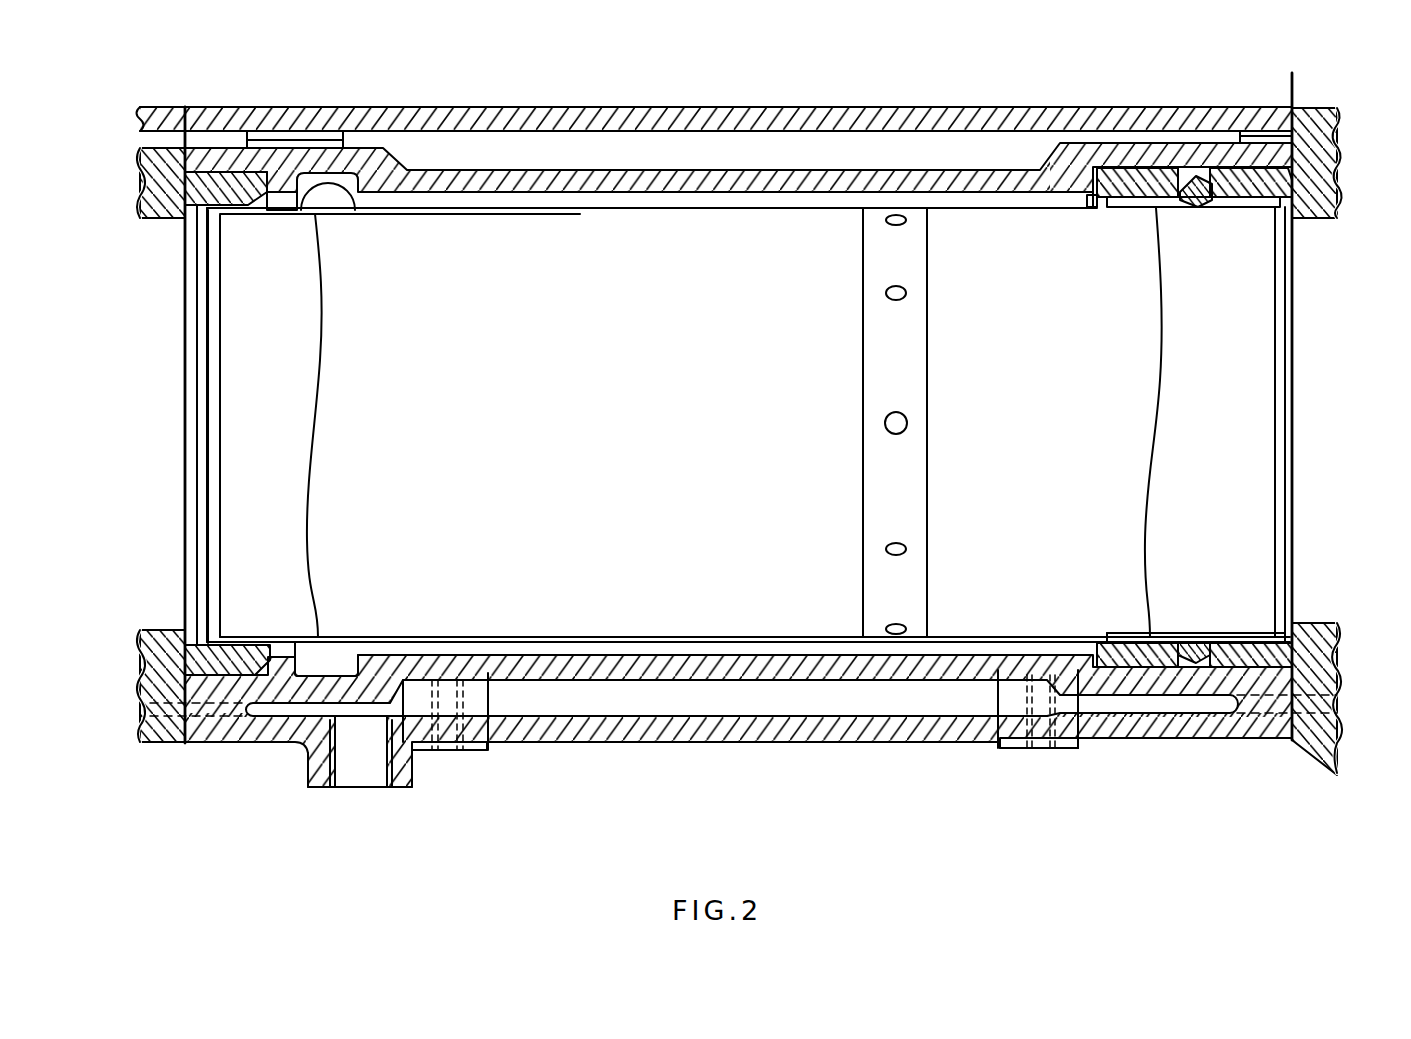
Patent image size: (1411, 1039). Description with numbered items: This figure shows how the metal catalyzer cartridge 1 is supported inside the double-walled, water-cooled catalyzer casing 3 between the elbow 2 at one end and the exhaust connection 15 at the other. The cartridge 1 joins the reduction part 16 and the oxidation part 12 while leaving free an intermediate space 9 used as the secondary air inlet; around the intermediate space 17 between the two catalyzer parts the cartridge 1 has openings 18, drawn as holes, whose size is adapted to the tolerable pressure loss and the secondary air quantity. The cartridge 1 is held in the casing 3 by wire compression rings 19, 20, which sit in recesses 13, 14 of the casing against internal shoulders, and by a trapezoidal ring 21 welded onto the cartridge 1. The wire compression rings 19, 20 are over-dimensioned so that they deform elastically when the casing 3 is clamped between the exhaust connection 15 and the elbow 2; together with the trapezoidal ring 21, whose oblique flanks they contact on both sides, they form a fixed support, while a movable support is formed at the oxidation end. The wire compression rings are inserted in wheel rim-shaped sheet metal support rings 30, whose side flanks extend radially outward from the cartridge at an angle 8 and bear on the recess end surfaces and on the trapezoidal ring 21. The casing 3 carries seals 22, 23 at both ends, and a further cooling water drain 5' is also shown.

The metal catalyzer cartridge 1 is at (606, 646).
The elbow 2 is at (1338, 198).
The catalyzer casing 3 is at (443, 108).
The cooling water drain 5' is at (360, 778).
The angle 8 is at (335, 212).
The intermediate space 9 is at (534, 646).
The oxidation part 12 is at (597, 214).
The recess 13 is at (1094, 198).
The recess 14 is at (292, 140).
The exhaust connection 15 is at (138, 212).
The reduction part 16 is at (1188, 255).
The intermediate space 17 is at (926, 491).
The openings 18 is at (886, 293).
The wire compression ring 19 is at (1236, 164).
The wire compression ring 20 is at (212, 164).
The trapezoidal ring 21 is at (1190, 207).
The seal 22 is at (1294, 82).
The seal 23 is at (185, 110).
The support ring 30 is at (1292, 230).